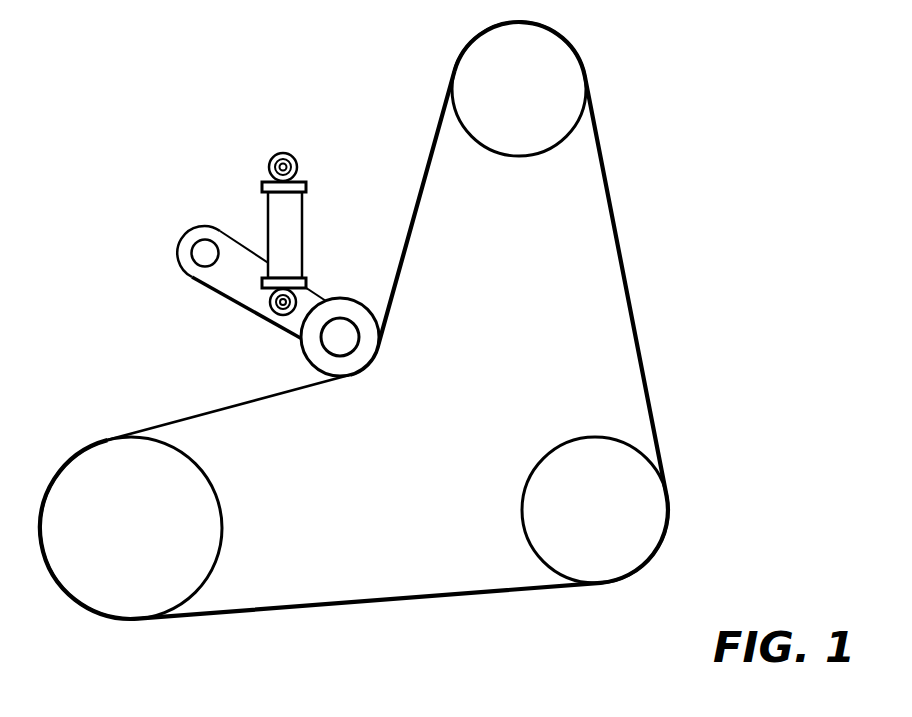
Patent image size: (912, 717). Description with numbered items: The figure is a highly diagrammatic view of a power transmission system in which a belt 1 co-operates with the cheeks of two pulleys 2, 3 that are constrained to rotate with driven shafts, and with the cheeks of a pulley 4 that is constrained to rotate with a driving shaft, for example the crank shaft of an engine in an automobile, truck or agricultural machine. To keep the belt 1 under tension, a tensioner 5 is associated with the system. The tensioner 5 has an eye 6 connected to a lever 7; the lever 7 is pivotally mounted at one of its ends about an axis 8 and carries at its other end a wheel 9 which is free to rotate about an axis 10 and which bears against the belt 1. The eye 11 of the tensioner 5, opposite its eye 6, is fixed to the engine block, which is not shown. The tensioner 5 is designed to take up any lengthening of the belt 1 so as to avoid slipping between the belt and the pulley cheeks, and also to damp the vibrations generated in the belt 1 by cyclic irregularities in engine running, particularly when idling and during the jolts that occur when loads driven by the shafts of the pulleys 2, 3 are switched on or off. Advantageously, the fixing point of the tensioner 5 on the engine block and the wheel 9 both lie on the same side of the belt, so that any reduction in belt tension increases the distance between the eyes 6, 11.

The belt 1 is at (628, 292).
The pulley 2 is at (509, 157).
The pulley 3 is at (588, 436).
The pulley 4 is at (222, 527).
The tensioner 5 is at (304, 205).
The eye 6 is at (286, 318).
The lever 7 is at (247, 314).
The axis 8 is at (197, 255).
The wheel 9 is at (347, 299).
The axis 10 is at (352, 352).
The eye 11 is at (284, 160).